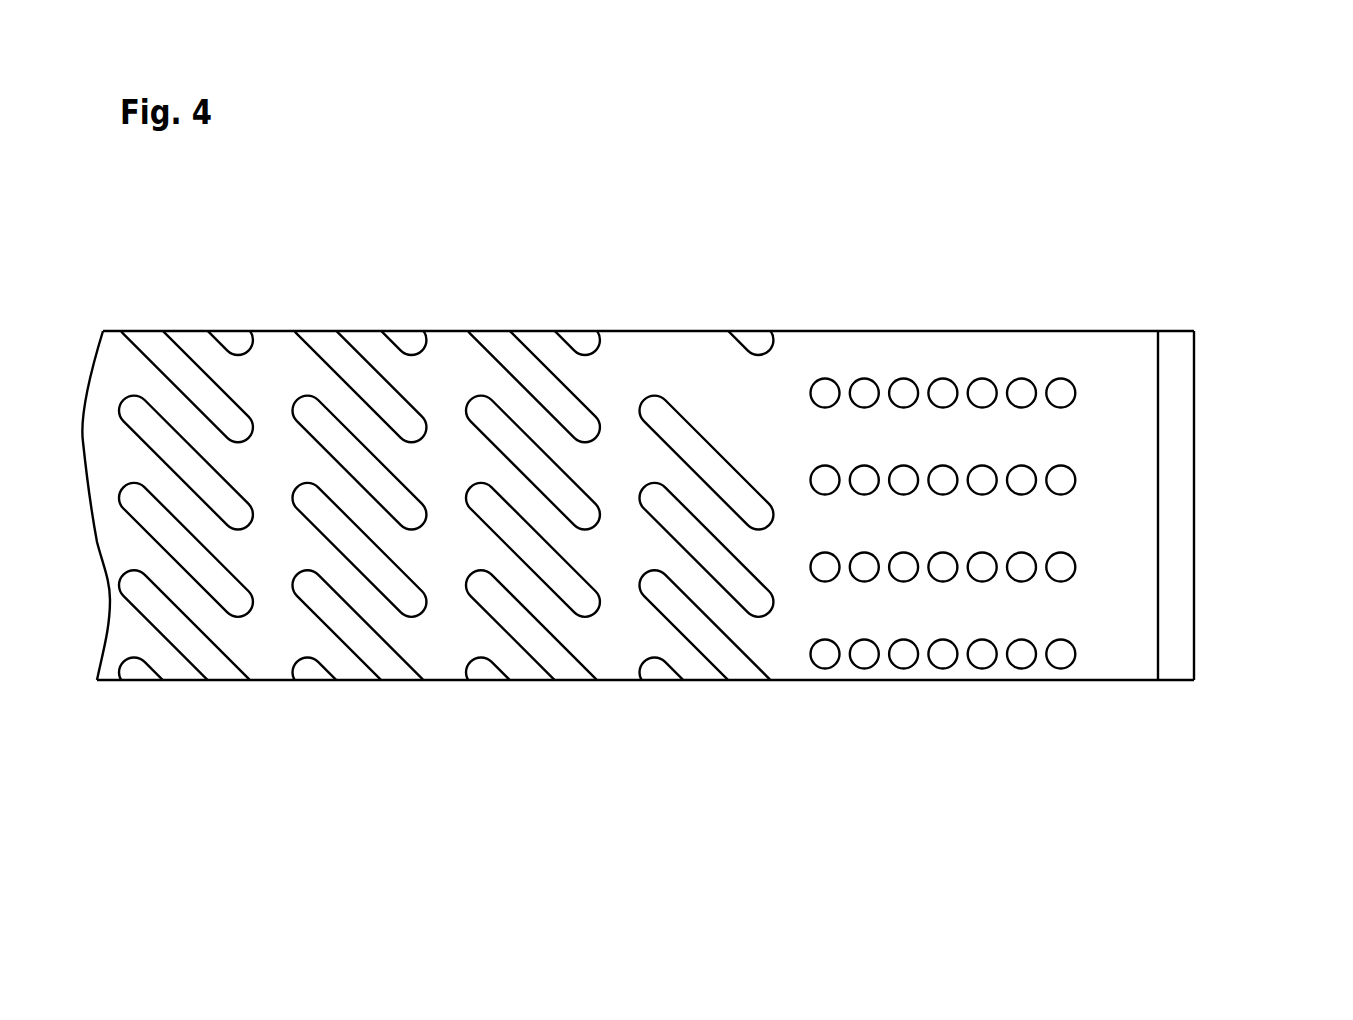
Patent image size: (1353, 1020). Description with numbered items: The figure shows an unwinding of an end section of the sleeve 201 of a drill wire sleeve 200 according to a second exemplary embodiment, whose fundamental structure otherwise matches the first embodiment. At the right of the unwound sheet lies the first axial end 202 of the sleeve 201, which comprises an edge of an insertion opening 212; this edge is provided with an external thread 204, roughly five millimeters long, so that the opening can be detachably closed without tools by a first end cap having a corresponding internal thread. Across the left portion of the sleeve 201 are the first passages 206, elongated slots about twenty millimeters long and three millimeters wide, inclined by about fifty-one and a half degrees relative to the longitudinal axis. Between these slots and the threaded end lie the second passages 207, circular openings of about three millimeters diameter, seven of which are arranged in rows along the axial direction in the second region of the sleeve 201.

The drill wire sleeve 200 is at (1161, 277).
The sleeve 201 is at (453, 648).
The first axial end 202 is at (1092, 692).
The external thread 204 is at (1177, 584).
The first passages 206 is at (715, 393).
The second passages 207 is at (983, 393).
The insertion opening 212 is at (1217, 447).